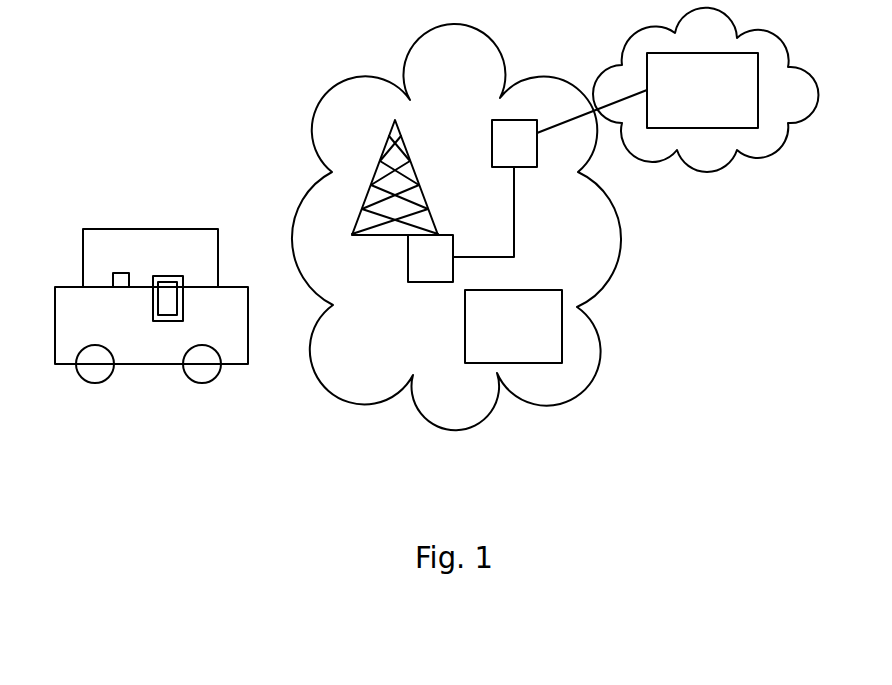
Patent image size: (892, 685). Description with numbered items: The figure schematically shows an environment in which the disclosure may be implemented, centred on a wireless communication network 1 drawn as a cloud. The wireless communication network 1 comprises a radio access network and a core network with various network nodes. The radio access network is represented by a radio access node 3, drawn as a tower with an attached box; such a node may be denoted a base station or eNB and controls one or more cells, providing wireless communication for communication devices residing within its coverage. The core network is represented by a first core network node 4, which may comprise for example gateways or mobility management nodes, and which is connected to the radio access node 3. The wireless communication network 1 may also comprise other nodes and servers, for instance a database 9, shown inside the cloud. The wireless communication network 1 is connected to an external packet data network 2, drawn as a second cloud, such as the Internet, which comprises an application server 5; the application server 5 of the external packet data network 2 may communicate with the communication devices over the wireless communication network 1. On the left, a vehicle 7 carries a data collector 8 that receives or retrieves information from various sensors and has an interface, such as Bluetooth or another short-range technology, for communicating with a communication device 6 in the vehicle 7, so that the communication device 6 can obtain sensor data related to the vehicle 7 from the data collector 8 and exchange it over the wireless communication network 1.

The wireless communication network 1 is at (458, 78).
The external packet data network 2 is at (765, 140).
The radio access node 3 is at (425, 272).
The first core network node 4 is at (520, 157).
The application server 5 is at (747, 67).
The communication device 6 is at (180, 303).
The vehicle 7 is at (232, 338).
The data collector 8 is at (120, 277).
The database 9 is at (547, 328).